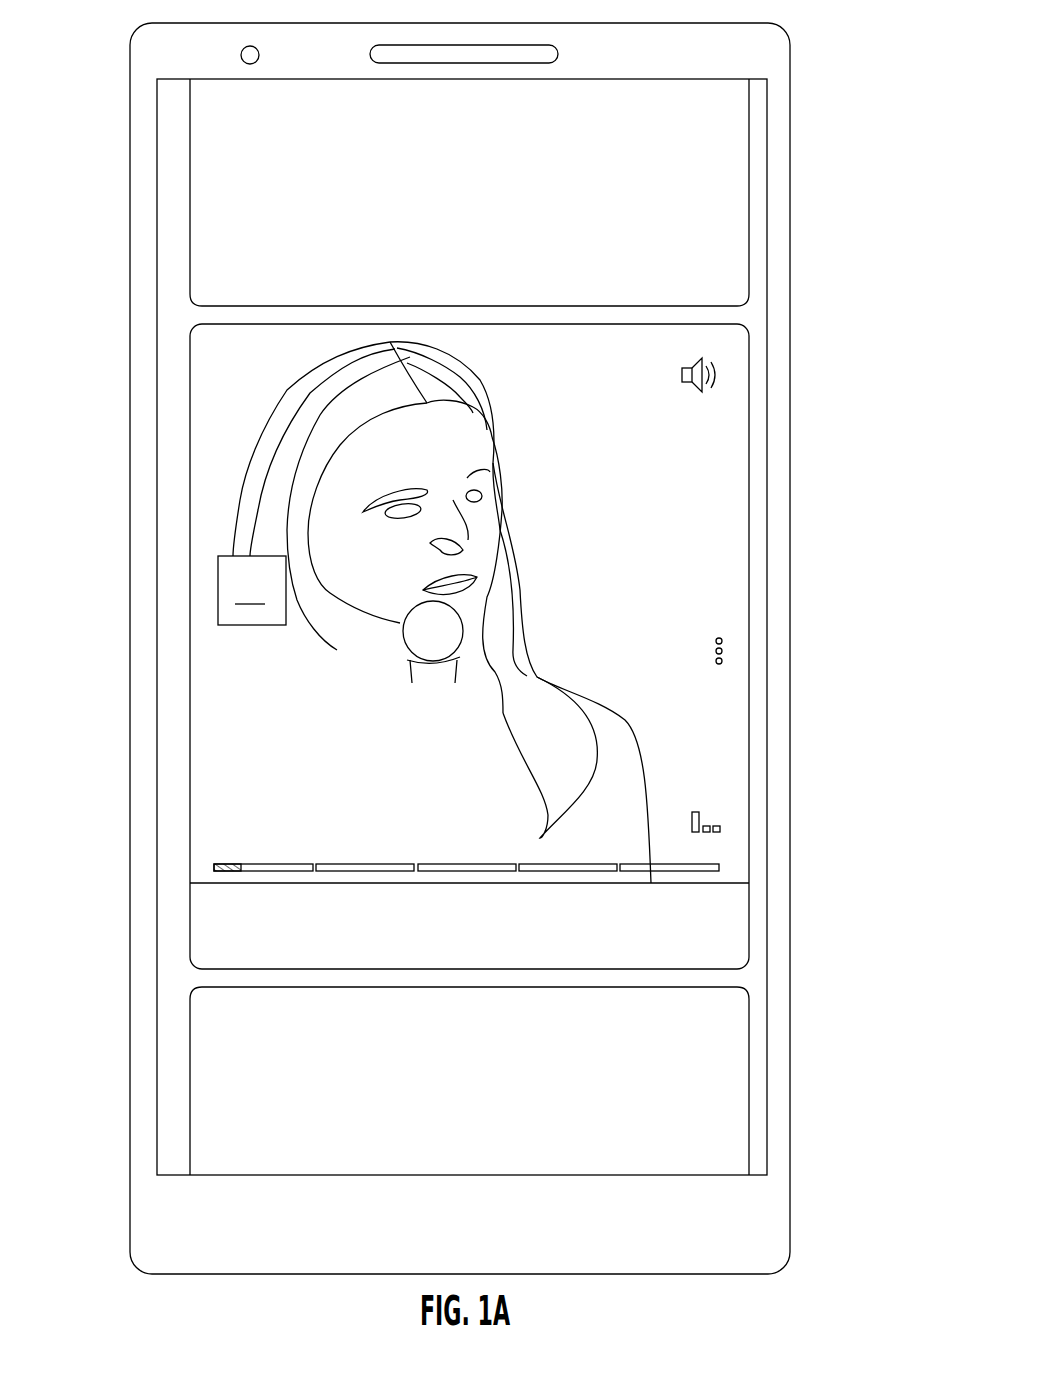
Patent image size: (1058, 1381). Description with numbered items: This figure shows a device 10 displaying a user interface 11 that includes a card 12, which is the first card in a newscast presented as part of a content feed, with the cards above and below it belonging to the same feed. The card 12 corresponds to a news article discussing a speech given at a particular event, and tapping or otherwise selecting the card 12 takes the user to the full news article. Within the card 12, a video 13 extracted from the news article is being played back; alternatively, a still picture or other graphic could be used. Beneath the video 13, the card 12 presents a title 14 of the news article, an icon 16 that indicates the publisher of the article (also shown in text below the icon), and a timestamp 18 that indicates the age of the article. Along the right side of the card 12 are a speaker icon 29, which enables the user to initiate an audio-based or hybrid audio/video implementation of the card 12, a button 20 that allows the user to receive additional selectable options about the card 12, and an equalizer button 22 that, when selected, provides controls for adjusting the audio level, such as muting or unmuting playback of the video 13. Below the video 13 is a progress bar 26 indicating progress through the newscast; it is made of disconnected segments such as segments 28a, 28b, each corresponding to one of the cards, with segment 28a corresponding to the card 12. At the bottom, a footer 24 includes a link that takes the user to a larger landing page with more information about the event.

The device 10 is at (130, 82).
The user interface 11 is at (175, 153).
The card 12 is at (197, 340).
The video 13 is at (318, 472).
The icon 16 is at (215, 568).
The timestamp 18 is at (275, 640).
The title 14 is at (215, 695).
The speaker icon 29 is at (723, 365).
The button 20 is at (728, 640).
The equalizer button 22 is at (727, 820).
The progress bar 26 is at (387, 958).
The segment 28a is at (257, 878).
The segment 28b is at (345, 878).
The footer 24 is at (605, 920).